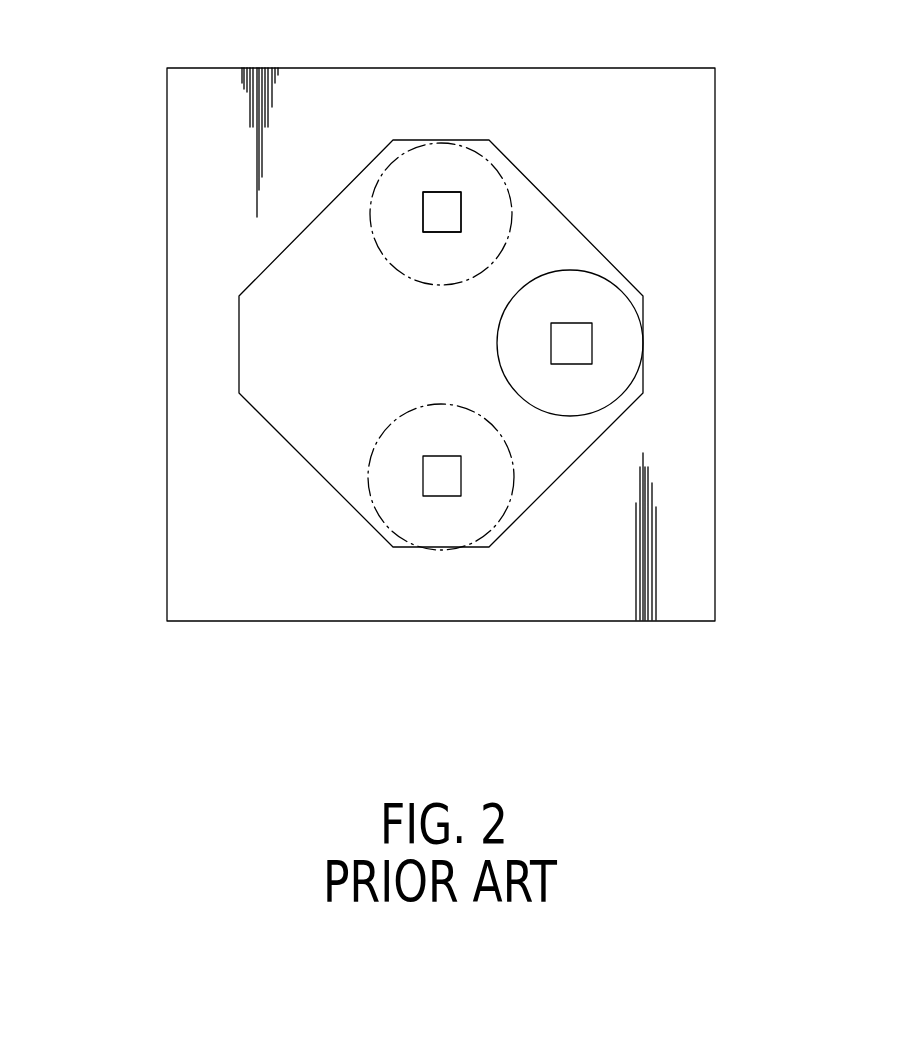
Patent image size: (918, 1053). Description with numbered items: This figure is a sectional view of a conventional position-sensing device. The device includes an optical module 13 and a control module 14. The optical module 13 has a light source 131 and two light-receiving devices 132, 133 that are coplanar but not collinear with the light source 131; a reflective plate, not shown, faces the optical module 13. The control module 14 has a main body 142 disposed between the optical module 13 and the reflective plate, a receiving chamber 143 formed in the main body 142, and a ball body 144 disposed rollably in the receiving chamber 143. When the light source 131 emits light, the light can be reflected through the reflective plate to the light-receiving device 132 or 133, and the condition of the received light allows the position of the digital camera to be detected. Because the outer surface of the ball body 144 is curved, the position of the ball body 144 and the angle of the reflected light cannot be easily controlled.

The optical module 13 is at (437, 172).
The light source 131 is at (572, 349).
The light-receiving device 132 is at (447, 215).
The light-receiving device 133 is at (450, 479).
The control module 14 is at (167, 296).
The main body 142 is at (167, 448).
The receiving chamber 143 is at (317, 442).
The ball body 144 is at (601, 292).